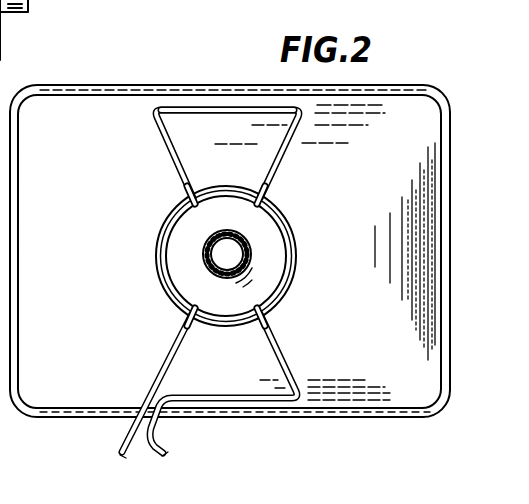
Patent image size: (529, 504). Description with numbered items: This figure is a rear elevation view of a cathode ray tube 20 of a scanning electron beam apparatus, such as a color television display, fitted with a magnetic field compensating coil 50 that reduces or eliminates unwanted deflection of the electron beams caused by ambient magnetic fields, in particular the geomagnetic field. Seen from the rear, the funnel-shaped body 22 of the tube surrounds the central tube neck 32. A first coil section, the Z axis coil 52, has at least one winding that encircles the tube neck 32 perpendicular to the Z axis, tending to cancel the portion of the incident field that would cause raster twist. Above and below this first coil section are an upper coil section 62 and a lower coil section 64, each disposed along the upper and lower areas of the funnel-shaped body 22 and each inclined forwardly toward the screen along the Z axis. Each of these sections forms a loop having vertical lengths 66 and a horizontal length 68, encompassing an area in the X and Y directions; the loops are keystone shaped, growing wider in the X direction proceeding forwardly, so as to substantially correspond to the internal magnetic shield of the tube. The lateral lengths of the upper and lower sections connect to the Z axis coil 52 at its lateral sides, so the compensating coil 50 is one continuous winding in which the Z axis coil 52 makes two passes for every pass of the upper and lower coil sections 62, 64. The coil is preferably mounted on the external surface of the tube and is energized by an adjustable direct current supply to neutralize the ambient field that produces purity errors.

The cathode ray tube 20 is at (38, 417).
The funnel-shaped body 22 is at (85, 115).
The tube neck 32 is at (248, 246).
The compensating coil 50 is at (159, 278).
The Z axis coil 52 is at (288, 260).
The upper coil section 62 is at (281, 166).
The lower coil section 64 is at (282, 352).
The vertical lengths 66 is at (169, 147).
The horizontal length 68 is at (248, 104).